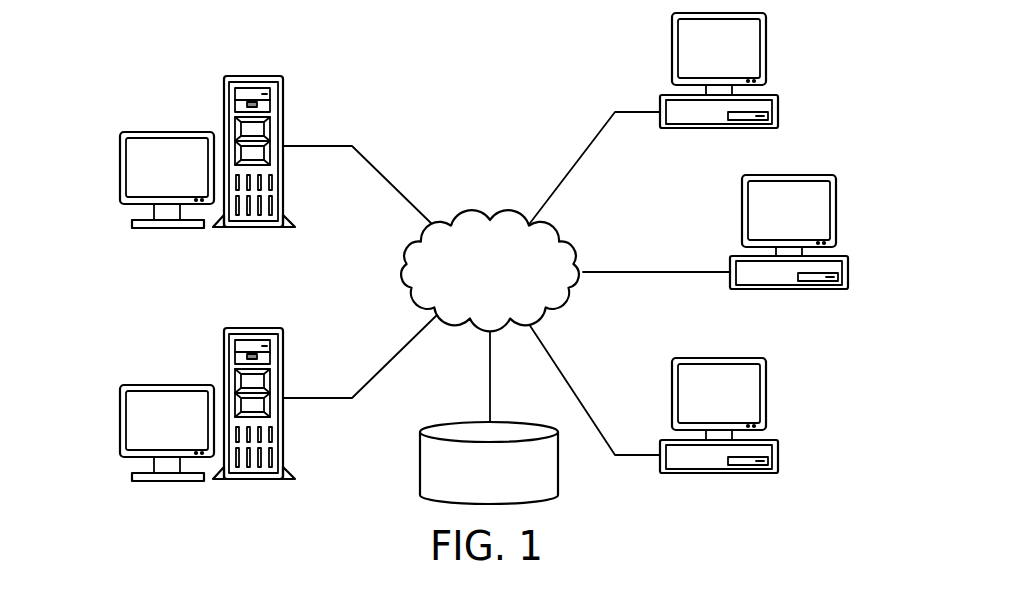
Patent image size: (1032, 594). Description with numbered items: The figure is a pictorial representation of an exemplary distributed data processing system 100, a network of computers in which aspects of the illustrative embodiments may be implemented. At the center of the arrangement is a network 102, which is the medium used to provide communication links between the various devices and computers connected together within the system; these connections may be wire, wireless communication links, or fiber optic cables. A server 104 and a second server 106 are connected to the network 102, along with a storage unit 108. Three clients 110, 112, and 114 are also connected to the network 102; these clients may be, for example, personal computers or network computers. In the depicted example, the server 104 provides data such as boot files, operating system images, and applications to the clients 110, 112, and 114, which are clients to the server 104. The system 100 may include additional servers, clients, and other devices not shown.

The distributed data processing system 100 is at (354, 54).
The network 102 is at (460, 218).
The server 104 is at (120, 168).
The server 106 is at (120, 420).
The storage unit 108 is at (420, 461).
The client 110 is at (778, 103).
The client 112 is at (848, 283).
The client 114 is at (778, 465).